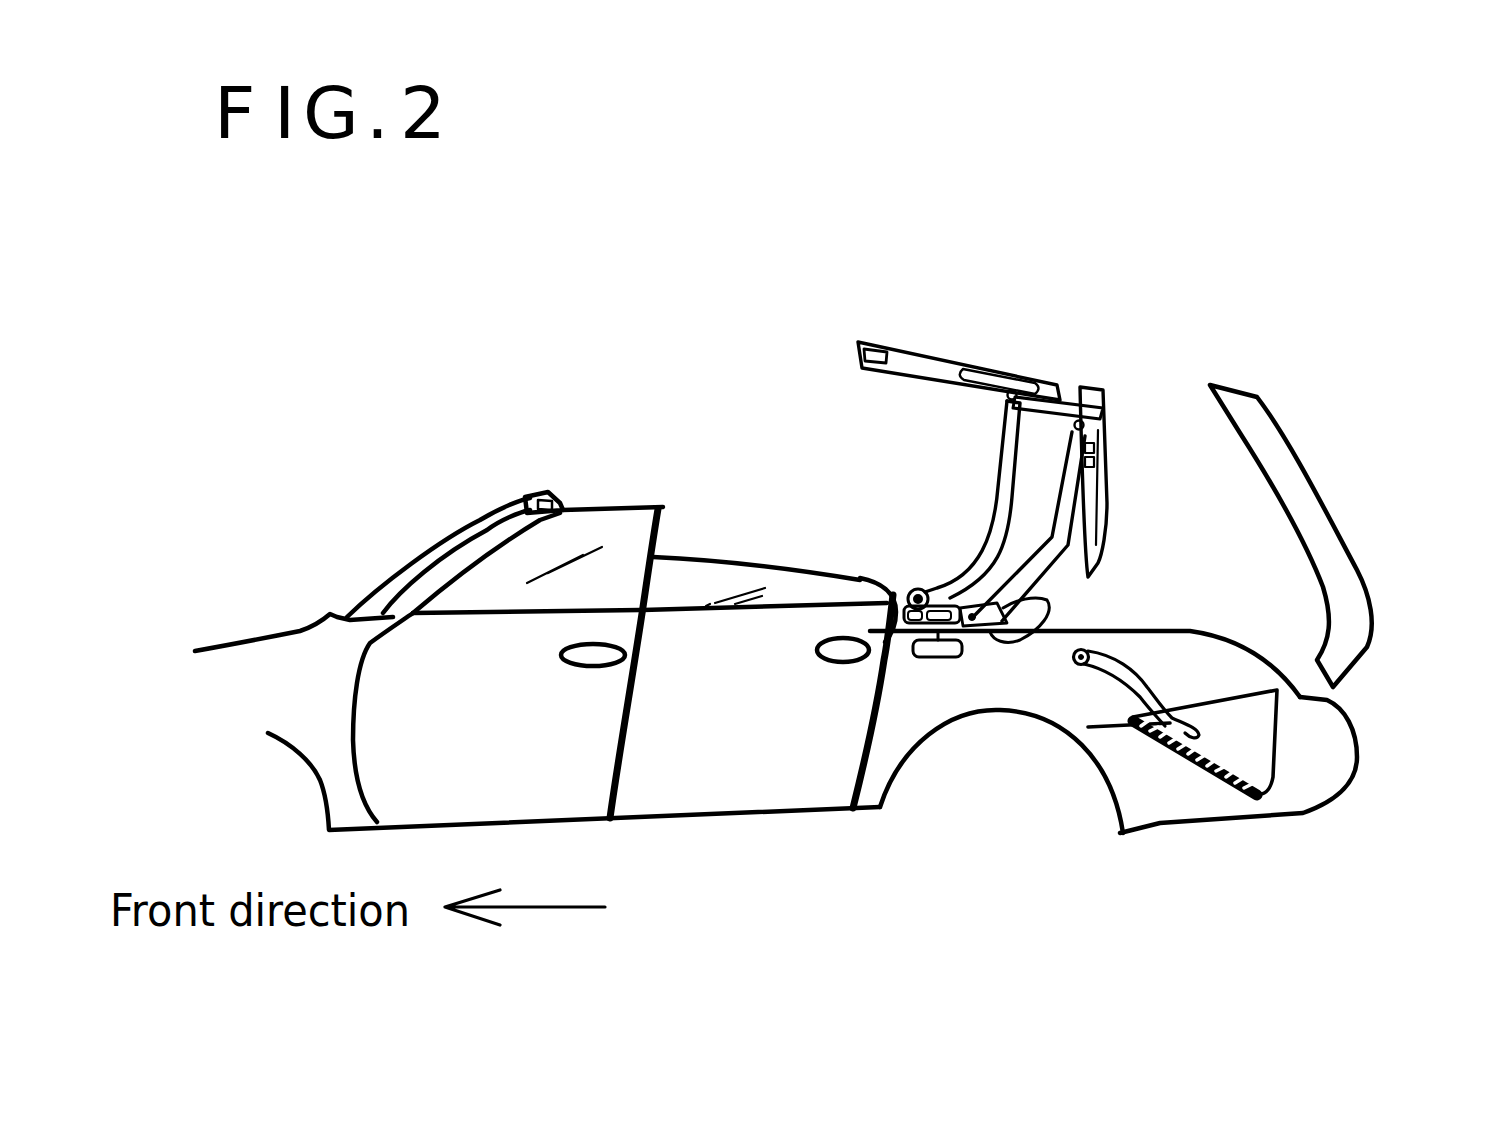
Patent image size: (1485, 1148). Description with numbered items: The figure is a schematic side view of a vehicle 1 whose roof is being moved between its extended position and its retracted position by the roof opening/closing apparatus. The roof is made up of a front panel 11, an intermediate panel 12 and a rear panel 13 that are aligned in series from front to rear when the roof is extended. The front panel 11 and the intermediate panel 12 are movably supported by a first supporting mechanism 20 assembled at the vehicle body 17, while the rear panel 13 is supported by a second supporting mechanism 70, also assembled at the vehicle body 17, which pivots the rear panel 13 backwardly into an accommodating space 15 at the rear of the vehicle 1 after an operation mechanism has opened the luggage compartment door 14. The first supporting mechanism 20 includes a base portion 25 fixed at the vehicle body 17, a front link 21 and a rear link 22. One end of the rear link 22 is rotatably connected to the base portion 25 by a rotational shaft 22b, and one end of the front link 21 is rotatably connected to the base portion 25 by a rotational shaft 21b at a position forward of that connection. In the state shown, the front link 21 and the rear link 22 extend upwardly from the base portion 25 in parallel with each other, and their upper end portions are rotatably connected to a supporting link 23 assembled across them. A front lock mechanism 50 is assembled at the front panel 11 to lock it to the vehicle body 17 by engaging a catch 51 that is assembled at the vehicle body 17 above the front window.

The vehicle 1 is at (468, 450).
The catch 51 is at (567, 500).
The front lock mechanism 50 is at (858, 350).
The front panel 11 is at (928, 363).
The supporting link 23 is at (1058, 392).
The intermediate panel 12 is at (1110, 398).
The first supporting mechanism 20 is at (934, 525).
The front link 21 is at (1003, 443).
The rotational shaft 21b is at (920, 590).
The rear link 22 is at (1037, 560).
The rotational shaft 22b is at (1022, 625).
The base portion 25 is at (880, 638).
The second supporting mechanism 70 is at (1118, 662).
The accommodating space 15 is at (1195, 612).
The luggage compartment door 14 is at (1290, 457).
The rear panel 13 is at (1260, 750).
The vehicle body 17 is at (1020, 690).